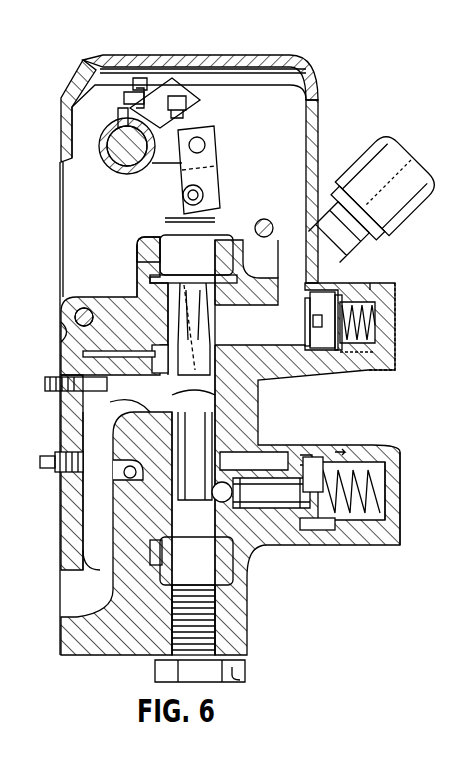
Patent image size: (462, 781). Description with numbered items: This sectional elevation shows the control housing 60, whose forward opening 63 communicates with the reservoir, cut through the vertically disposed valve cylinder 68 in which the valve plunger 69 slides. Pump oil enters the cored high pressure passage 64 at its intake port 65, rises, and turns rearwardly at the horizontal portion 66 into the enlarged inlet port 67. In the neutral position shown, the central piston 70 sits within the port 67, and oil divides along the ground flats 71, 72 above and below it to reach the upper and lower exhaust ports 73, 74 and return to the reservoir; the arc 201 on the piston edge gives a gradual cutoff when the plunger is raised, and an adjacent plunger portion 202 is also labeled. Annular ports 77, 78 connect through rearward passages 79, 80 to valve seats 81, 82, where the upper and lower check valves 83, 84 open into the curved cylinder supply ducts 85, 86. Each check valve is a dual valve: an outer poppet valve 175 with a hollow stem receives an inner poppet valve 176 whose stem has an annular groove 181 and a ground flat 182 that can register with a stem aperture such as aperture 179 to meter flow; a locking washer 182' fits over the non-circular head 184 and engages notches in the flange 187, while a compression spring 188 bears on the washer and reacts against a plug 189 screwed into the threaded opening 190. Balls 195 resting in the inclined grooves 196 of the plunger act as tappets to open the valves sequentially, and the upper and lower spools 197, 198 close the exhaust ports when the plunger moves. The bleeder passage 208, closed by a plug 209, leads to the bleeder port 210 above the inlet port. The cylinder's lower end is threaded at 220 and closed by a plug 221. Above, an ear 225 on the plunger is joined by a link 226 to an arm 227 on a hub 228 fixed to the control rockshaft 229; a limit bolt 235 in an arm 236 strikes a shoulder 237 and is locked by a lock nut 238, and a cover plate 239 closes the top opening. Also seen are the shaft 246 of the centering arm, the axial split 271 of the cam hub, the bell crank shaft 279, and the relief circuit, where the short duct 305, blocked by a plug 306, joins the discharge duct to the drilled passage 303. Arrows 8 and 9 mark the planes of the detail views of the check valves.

The check valve 8 is at (334, 452).
The relief valve 9 is at (273, 470).
The control housing 60 is at (320, 100).
The opening 63 is at (60, 165).
The high pressure passage 64 is at (62, 525).
The intake port 65 is at (70, 605).
The horizontal portion of high pressure passage 66 is at (120, 425).
The inlet port 67 is at (272, 409).
The valve cylinder 68 is at (278, 394).
The valve plunger 69 is at (232, 214).
The piston 70 is at (168, 420).
The upper flat portions 71 is at (150, 298).
The lower flat portions 72 is at (195, 456).
The upper annular port 73 is at (138, 262).
The lower annular port 74 is at (120, 548).
The upper annular port 77 is at (120, 354).
The lower annular port 78 is at (128, 462).
The upper passage 79 is at (190, 320).
The lower passage 80 is at (213, 490).
The upper valve seat 81 is at (288, 320).
The lower valve seat 82 is at (322, 460).
The upper check valve 83 is at (250, 298).
The lower check valve 84 is at (312, 532).
The upper cylinder supply duct 85 is at (328, 292).
The lower cylinder supply duct 86 is at (348, 478).
The outer poppet valve 175 is at (285, 300).
The inner poppet valve 176 is at (200, 596).
The aperture 179 is at (290, 342).
The annular groove 181 is at (400, 478).
The flat portion 182 is at (294, 454).
The locking washer 182' is at (365, 357).
The head 184 is at (400, 498).
The flange 187 is at (338, 371).
The compression spring 188 is at (396, 305).
The plug 189 is at (392, 330).
The threaded opening 190 is at (396, 284).
The ball 195 is at (220, 282).
The inclined grooves 196 is at (168, 292).
The upper spool 197 is at (162, 236).
The lower spool 198 is at (160, 565).
The arc 201 is at (160, 408).
The spool land 202 is at (195, 430).
The bleeder passage 208 is at (60, 378).
The plug 209 is at (58, 391).
The bleeder port 210 is at (170, 360).
The threaded aperture 220 is at (170, 660).
The plug 221 is at (243, 678).
The ear 225 is at (216, 190).
The link 226 is at (206, 148).
The arm 227 is at (160, 166).
The hub 228 is at (108, 168).
The control rockshaft 229 is at (112, 128).
The bolt 235 is at (188, 103).
The arm 236 is at (200, 69).
The shoulder 237 is at (140, 92).
The lock nut 238 is at (162, 82).
The cover plate 239 is at (240, 55).
The transverse shaft 246 is at (75, 317).
The axial split 271 is at (120, 112).
The shaft 279 is at (268, 220).
The drilled passage 303 is at (125, 475).
The short duct 305 is at (56, 458).
The plug 306 is at (46, 470).